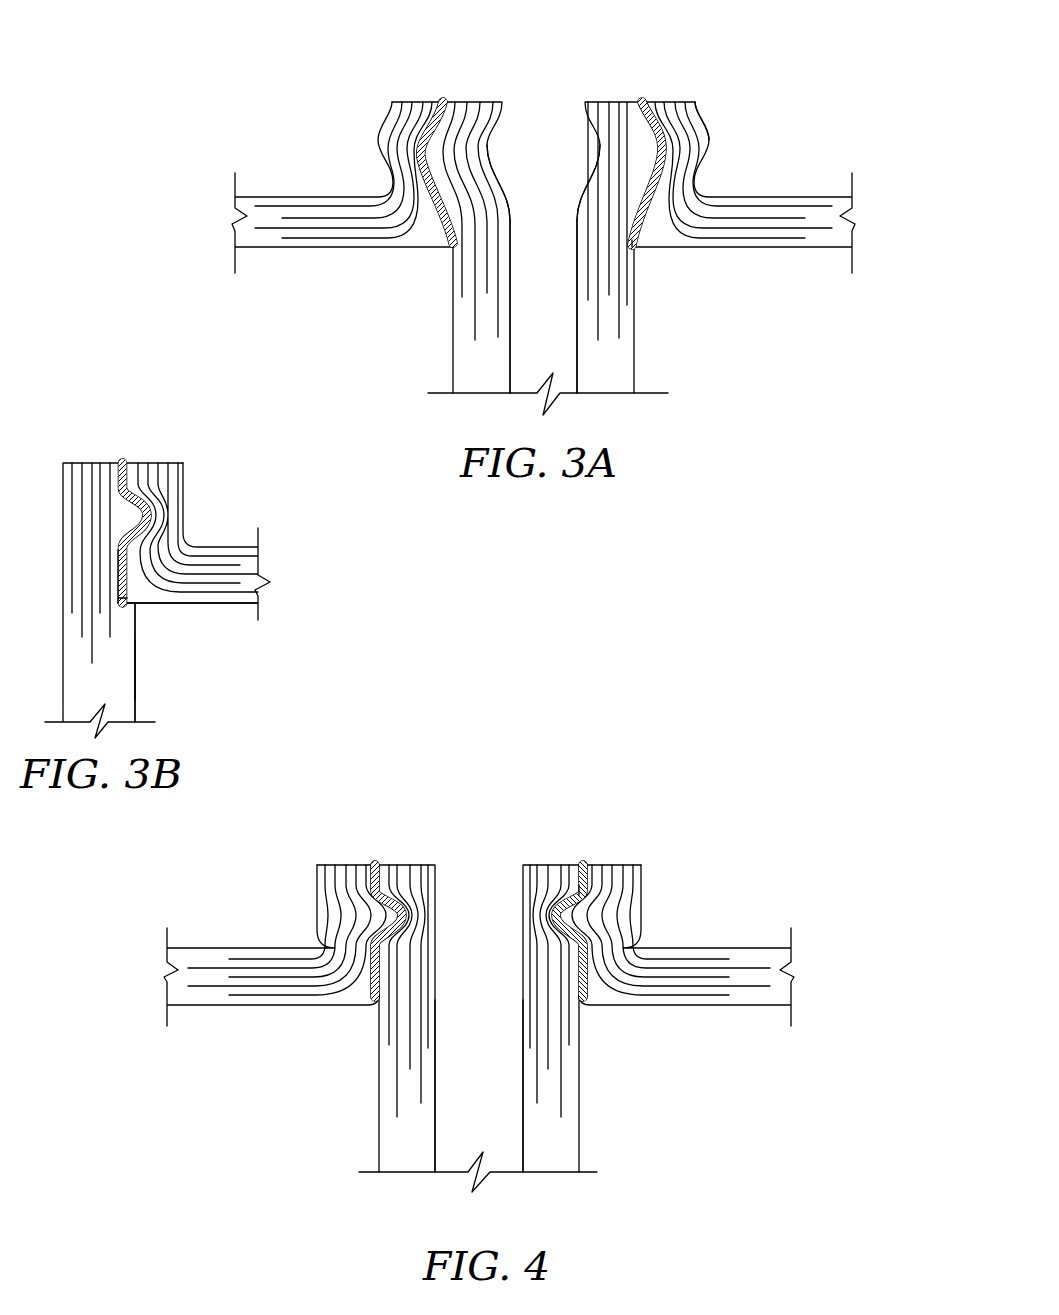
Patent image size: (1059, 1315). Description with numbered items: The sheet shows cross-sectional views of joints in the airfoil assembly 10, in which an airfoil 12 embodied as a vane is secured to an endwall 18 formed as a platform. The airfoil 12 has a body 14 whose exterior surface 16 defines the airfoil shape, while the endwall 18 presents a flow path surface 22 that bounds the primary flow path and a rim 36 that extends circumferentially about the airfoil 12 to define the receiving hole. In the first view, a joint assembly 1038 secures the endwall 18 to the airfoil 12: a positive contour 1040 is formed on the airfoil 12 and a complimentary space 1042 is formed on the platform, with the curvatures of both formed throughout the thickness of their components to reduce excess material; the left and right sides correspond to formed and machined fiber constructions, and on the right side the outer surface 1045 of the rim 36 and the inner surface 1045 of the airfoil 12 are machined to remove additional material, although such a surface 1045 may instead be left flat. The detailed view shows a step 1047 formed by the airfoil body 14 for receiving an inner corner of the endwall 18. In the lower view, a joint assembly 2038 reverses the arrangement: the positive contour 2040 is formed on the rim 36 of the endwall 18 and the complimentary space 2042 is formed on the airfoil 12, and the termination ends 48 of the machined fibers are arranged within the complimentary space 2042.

In FIG. 3A, the airfoil assembly 10 is at (838, 58).
In FIG. 4, the airfoil assembly 10 is at (796, 793).
In FIG. 3A, the airfoil 12 is at (620, 363).
In FIG. 3B, the airfoil 12 is at (145, 692).
In FIG. 4, the airfoil 12 is at (565, 1105).
In FIG. 3A, the body 14 is at (600, 358).
In FIG. 3B, the body 14 is at (72, 687).
In FIG. 4, the body 14 is at (543, 1153).
In FIG. 3A, the exterior surface 16 is at (632, 325).
In FIG. 3B, the exterior surface 16 is at (135, 677).
In FIG. 4, the exterior surface 16 is at (580, 1059).
In FIG. 3A, the endwall 18 is at (810, 235).
In FIG. 3B, the endwall 18 is at (238, 547).
In FIG. 4, the endwall 18 is at (761, 958).
In FIG. 3A, the flow path surface 22 is at (277, 248).
In FIG. 3B, the flow path surface 22 is at (233, 605).
In FIG. 4, the flow path surface 22 is at (202, 1007).
In FIG. 3A, the rim 36 is at (697, 103).
In FIG. 3A, the termination ends 48 is at (650, 233).
In FIG. 3B, the termination ends 48 is at (143, 543).
In FIG. 4, the termination ends 48 is at (580, 896).
In FIG. 3A, the joint assembly 1038 is at (442, 97).
In FIG. 3B, the joint assembly 1038 is at (147, 480).
In FIG. 3A, the positive contour 1040 is at (438, 152).
In FIG. 3A, the complimentary space 1042 is at (415, 143).
In FIG. 3B, the complimentary space 1042 is at (133, 517).
In FIG. 3A, the surface 1045 is at (590, 142).
In FIG. 3B, the step 1047 is at (117, 587).
In FIG. 4, the joint assembly 2038 is at (375, 863).
In FIG. 4, the positive contour 2040 is at (405, 907).
In FIG. 4, the complimentary space 2042 is at (402, 940).